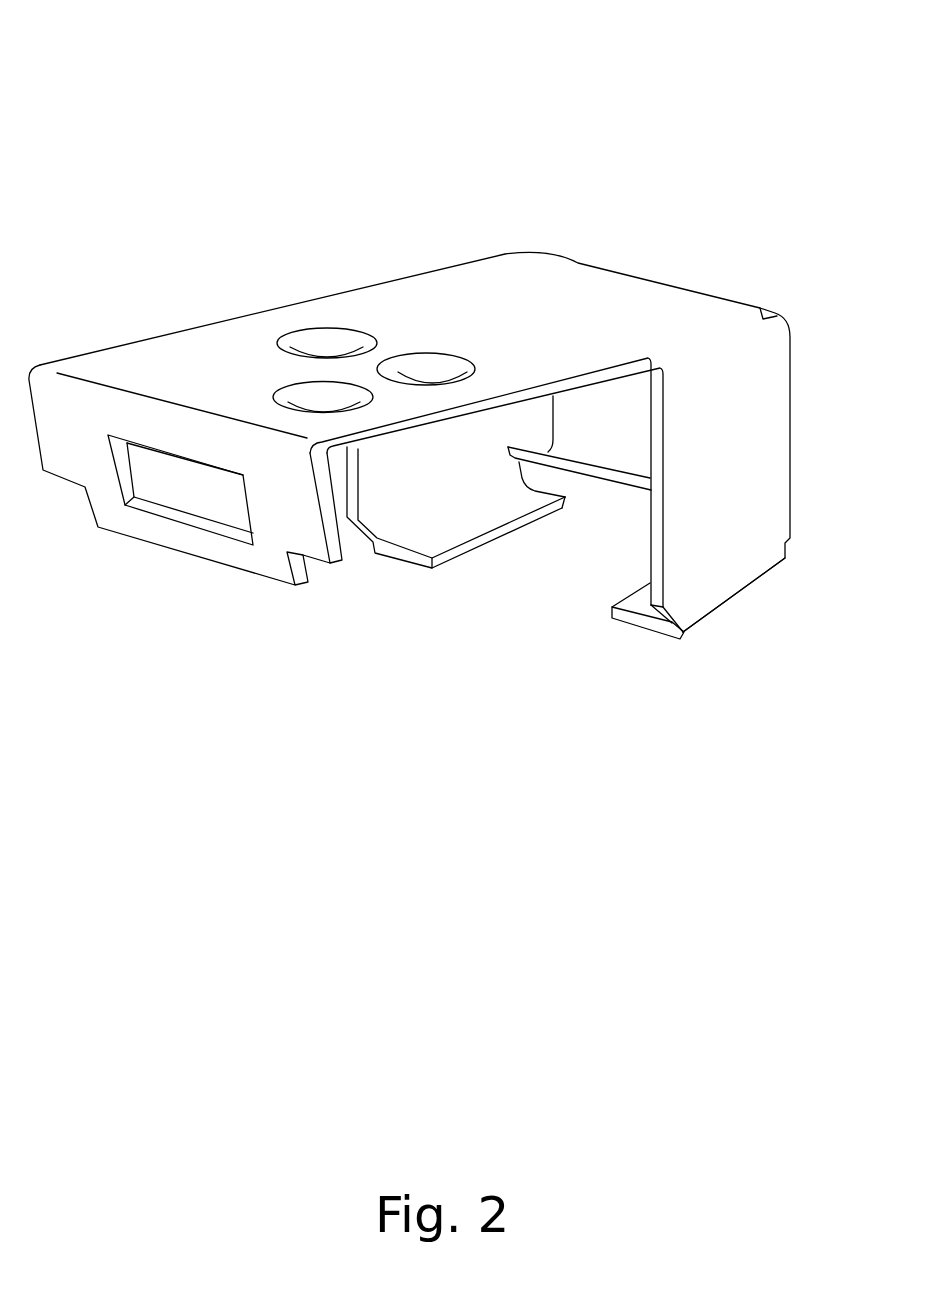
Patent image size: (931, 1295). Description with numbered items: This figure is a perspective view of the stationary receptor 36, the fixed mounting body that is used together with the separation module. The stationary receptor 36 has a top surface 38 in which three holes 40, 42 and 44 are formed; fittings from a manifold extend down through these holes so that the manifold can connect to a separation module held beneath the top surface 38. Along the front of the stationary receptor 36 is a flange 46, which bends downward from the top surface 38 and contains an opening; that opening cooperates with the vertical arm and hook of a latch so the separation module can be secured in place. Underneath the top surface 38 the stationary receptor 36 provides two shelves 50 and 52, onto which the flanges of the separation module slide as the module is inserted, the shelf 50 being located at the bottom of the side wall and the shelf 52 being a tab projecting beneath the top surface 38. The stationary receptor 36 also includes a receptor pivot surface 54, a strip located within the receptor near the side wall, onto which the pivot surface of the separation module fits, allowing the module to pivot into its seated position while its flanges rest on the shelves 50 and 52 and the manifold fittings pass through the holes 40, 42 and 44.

The stationary receptor 36 is at (662, 126).
The top surface 38 is at (573, 307).
The hole 40 is at (405, 365).
The hole 42 is at (292, 392).
The hole 44 is at (322, 347).
The flange 46 is at (140, 523).
The shelf 50 is at (640, 620).
The shelf 52 is at (478, 542).
The receptor pivot surface 54 is at (609, 467).